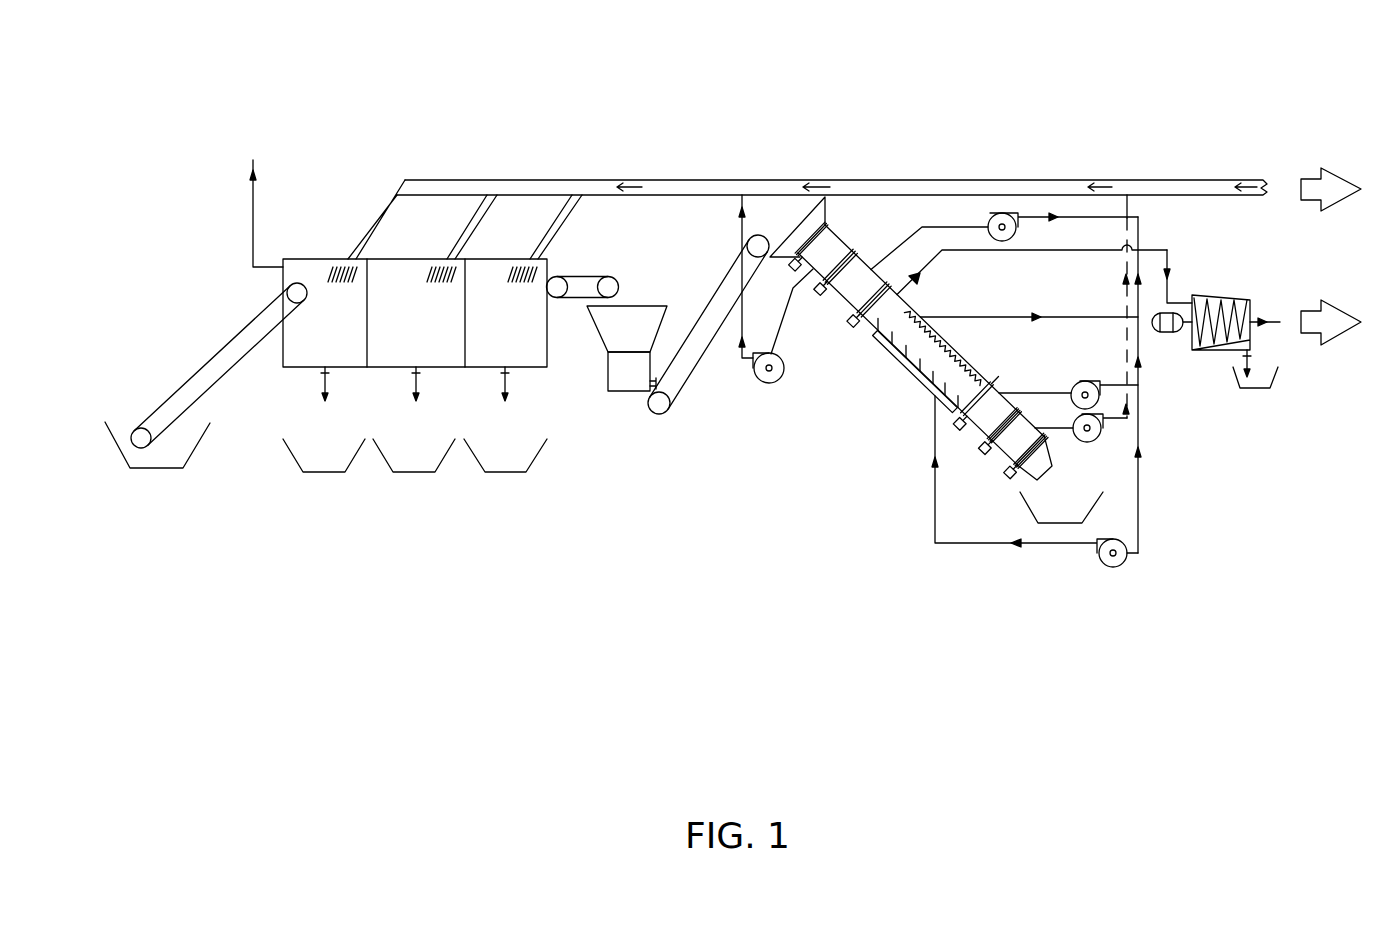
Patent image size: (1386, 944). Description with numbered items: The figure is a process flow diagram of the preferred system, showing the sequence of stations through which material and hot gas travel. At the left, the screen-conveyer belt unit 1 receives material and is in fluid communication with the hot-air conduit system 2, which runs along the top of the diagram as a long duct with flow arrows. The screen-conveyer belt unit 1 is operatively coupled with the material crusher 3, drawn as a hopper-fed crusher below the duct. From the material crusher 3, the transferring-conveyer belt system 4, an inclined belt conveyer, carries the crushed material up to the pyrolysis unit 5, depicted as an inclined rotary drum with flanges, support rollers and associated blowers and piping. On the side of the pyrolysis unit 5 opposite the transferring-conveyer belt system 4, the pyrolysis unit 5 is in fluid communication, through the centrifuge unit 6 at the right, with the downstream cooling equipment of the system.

The screen-conveyer belt unit 1 is at (320, 156).
The hot-air conduit system 2 is at (585, 180).
The material crusher 3 is at (623, 390).
The transferring-conveyer belt system 4 is at (698, 352).
The pyrolysis unit 5 is at (893, 390).
The centrifuge unit 6 is at (1200, 350).